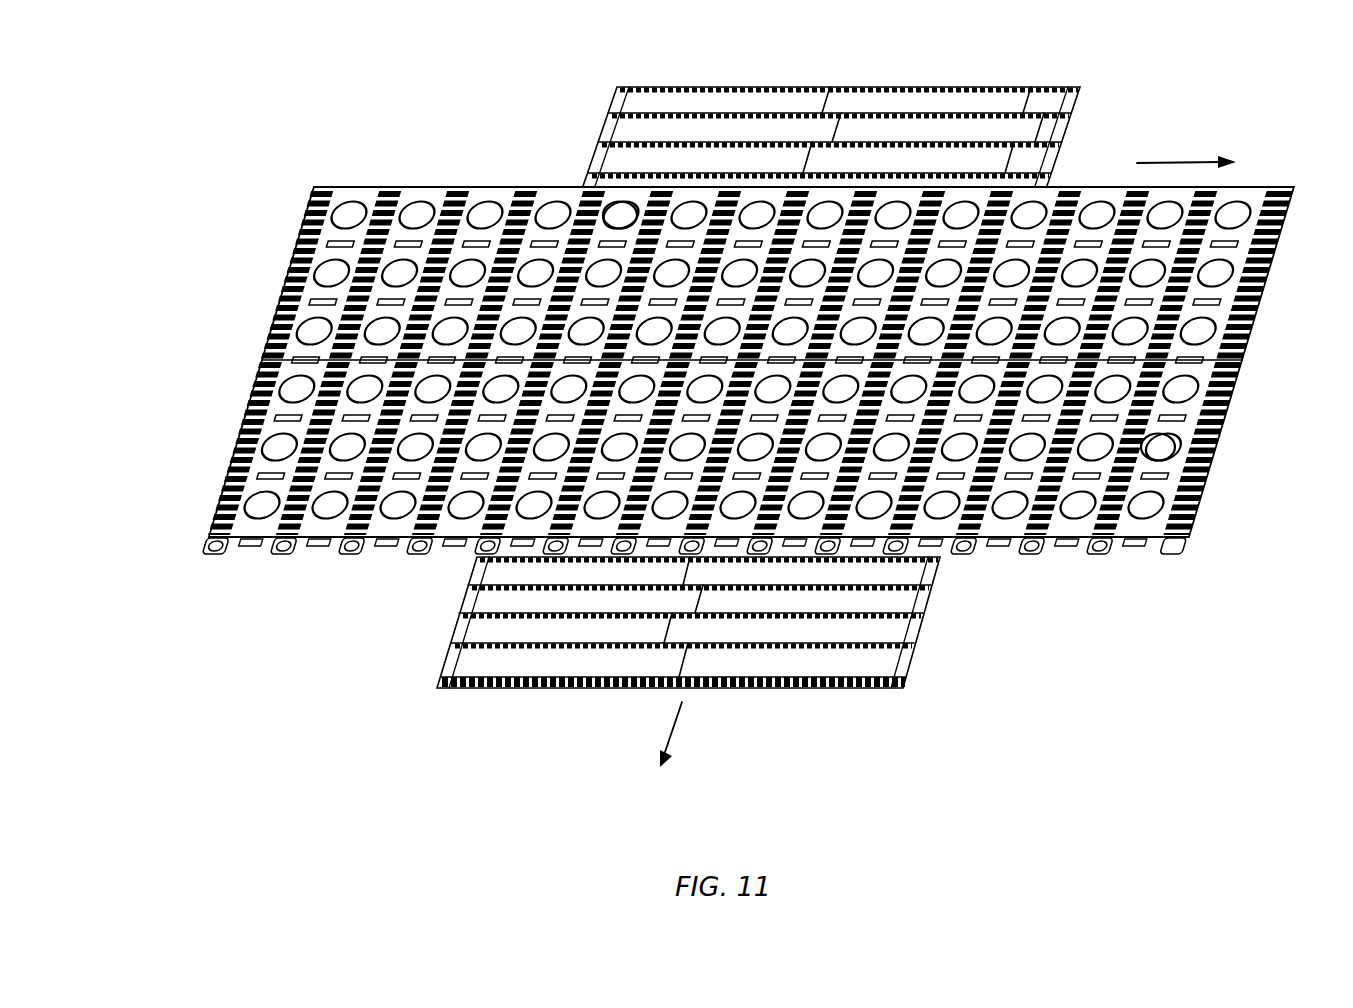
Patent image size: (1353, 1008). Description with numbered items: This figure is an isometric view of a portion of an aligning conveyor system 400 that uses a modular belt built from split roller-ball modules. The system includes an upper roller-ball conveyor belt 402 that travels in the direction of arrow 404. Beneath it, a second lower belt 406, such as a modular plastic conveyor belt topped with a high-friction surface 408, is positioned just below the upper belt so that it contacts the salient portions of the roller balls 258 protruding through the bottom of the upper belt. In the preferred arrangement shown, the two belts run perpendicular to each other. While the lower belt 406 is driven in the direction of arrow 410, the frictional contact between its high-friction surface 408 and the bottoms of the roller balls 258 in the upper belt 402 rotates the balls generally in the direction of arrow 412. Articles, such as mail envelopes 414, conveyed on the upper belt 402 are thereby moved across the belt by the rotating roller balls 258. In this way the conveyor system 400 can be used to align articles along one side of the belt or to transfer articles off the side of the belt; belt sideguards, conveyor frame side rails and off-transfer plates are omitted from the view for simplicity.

The conveyor system 400 is at (497, 95).
The upper roller-ball conveyor belt 402 is at (1092, 545).
The arrow 404 is at (1176, 160).
The second lower belt 406 is at (915, 628).
The high-friction surface 408 is at (1020, 90).
The arrow 410 is at (676, 725).
The arrow 412 is at (612, 206).
The mail envelopes 414 is at (1280, 183).
The roller balls 258 is at (1170, 445).